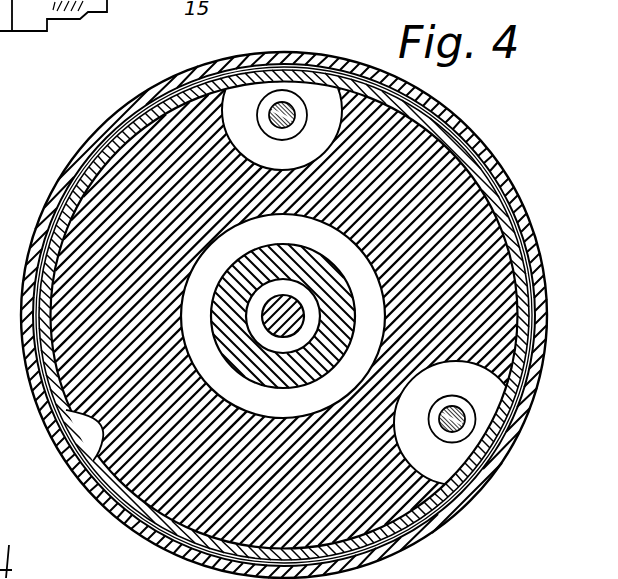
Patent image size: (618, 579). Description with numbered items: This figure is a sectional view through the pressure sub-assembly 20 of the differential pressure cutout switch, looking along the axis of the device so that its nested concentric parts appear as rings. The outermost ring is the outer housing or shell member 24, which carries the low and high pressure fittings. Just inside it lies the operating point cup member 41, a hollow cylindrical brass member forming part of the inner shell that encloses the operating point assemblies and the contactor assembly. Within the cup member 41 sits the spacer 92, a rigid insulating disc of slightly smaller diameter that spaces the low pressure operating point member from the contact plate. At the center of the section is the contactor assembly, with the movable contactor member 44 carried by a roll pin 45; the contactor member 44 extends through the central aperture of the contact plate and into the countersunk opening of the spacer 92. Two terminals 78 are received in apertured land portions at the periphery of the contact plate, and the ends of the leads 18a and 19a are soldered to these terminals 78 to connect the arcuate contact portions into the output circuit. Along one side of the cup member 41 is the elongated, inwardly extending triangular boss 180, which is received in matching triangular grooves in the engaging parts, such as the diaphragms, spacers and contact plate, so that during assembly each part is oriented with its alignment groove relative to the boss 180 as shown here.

The pressure sub-assembly 20 is at (87, 122).
The outer housing or shell member 24 is at (145, 97).
The spacer 92 is at (142, 523).
The operating point cup member 41 is at (88, 180).
The lead 19a is at (284, 108).
The lead 18a is at (458, 422).
The terminal 78 is at (300, 118).
The triangular boss 180 is at (85, 443).
The movable contactor member 44 is at (259, 384).
The roll pin 45 is at (285, 302).